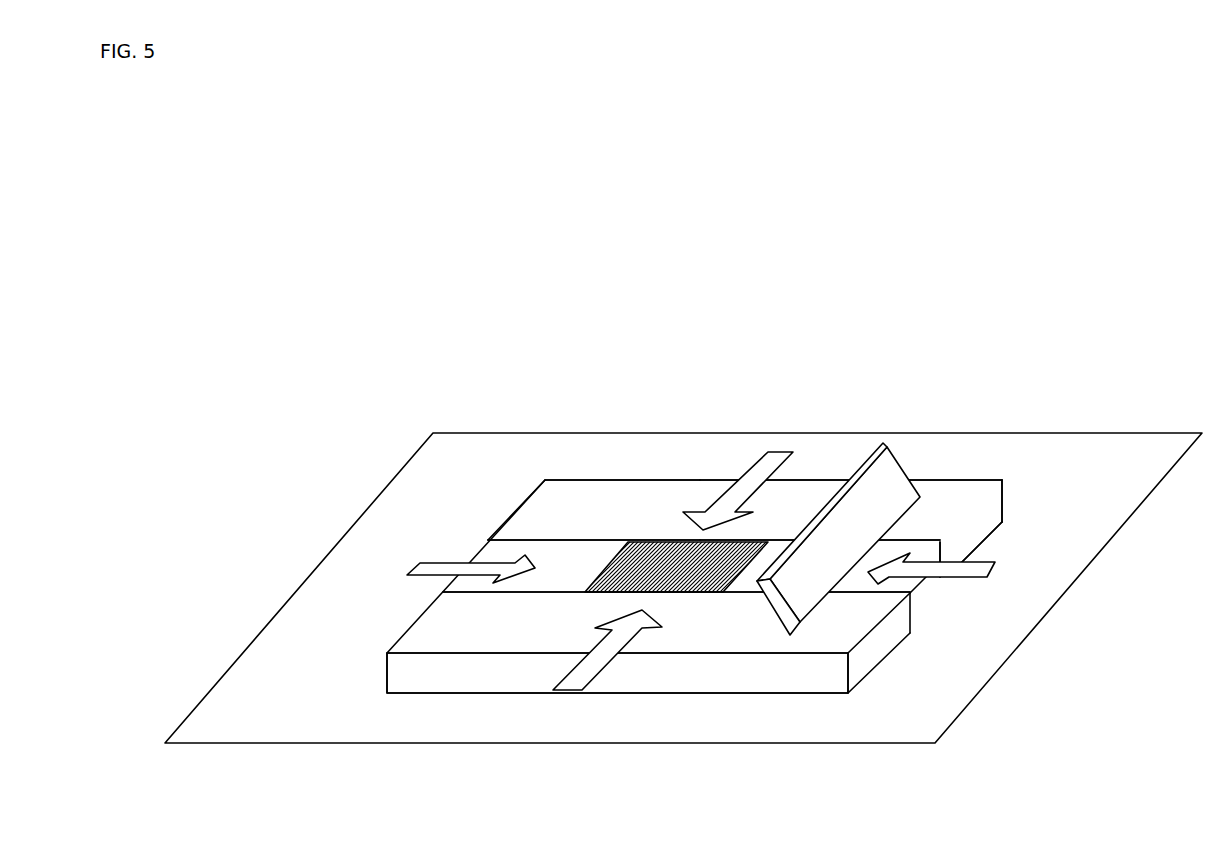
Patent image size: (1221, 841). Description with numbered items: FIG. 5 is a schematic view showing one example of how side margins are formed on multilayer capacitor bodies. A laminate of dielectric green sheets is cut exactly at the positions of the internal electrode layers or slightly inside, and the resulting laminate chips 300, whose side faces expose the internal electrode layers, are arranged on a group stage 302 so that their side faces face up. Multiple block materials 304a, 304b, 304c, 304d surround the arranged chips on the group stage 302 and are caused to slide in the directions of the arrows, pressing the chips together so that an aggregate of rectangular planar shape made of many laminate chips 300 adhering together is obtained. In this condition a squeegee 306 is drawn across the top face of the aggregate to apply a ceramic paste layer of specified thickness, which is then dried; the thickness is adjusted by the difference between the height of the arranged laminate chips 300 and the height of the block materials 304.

The laminate chip 300 is at (642, 532).
The group stage 302 is at (263, 693).
The block material 304 is at (737, 564).
The block material 304a is at (552, 552).
The block material 304b is at (649, 495).
The block material 304c is at (917, 588).
The block material 304d is at (727, 632).
The squeegee 306 is at (890, 477).